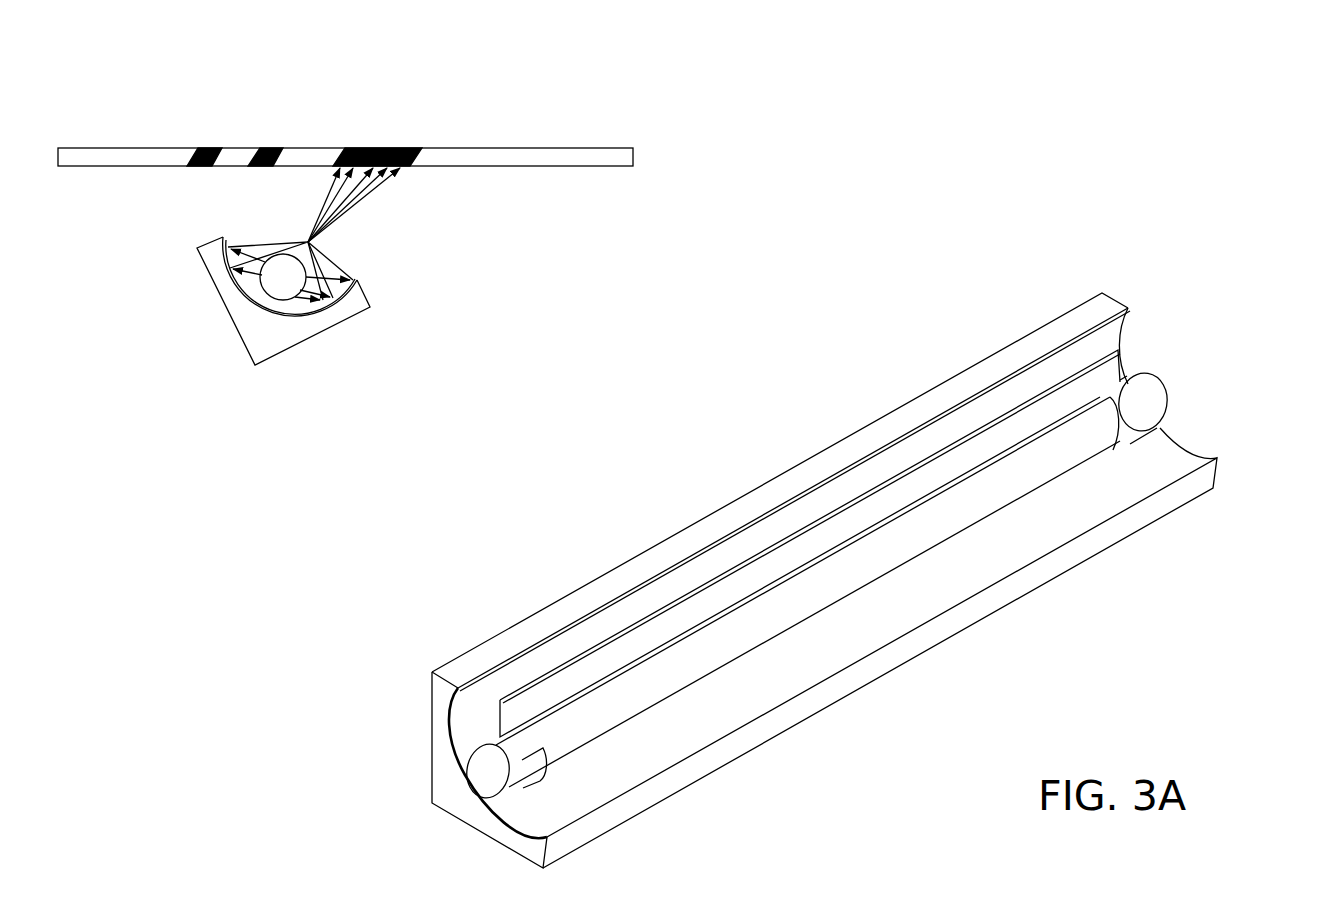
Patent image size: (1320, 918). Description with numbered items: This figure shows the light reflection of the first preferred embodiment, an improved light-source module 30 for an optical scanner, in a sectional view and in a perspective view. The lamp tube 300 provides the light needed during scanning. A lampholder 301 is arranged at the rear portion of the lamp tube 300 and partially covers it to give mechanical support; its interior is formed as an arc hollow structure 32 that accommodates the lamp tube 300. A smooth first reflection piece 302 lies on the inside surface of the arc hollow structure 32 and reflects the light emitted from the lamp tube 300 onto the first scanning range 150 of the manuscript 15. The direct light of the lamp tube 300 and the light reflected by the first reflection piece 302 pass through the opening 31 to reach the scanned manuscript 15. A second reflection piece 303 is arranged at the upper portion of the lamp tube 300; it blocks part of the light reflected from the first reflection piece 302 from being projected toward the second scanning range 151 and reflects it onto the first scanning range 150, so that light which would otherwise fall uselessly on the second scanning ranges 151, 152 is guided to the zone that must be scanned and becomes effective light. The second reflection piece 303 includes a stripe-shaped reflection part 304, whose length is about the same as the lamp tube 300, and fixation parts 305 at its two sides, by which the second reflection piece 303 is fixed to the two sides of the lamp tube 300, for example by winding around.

The manuscript 15 is at (535, 154).
The first scanning range 150 is at (386, 148).
The second scanning range 151 is at (288, 148).
The second scanning range 152 is at (208, 148).
The light-source module 30 is at (190, 289).
The opening 31 is at (337, 249).
The arc hollow structure 32 is at (253, 288).
The lamp tube 300 is at (273, 283).
The lampholder 301 is at (255, 345).
The first reflection piece 302 is at (301, 316).
The second reflection piece 303 is at (274, 232).
The reflection part 304 is at (825, 542).
The fixation part 305 is at (1130, 427).